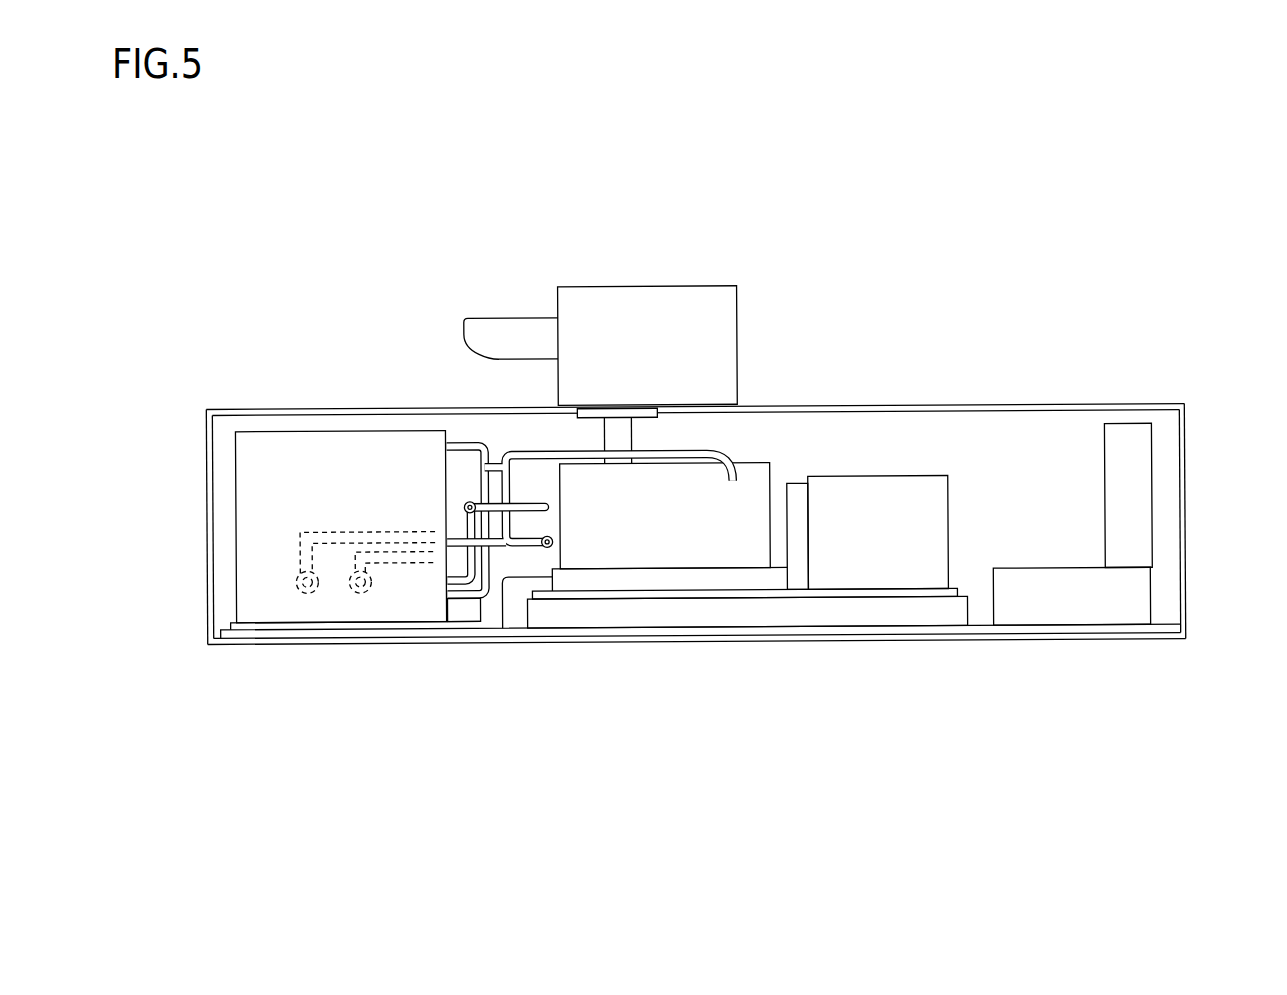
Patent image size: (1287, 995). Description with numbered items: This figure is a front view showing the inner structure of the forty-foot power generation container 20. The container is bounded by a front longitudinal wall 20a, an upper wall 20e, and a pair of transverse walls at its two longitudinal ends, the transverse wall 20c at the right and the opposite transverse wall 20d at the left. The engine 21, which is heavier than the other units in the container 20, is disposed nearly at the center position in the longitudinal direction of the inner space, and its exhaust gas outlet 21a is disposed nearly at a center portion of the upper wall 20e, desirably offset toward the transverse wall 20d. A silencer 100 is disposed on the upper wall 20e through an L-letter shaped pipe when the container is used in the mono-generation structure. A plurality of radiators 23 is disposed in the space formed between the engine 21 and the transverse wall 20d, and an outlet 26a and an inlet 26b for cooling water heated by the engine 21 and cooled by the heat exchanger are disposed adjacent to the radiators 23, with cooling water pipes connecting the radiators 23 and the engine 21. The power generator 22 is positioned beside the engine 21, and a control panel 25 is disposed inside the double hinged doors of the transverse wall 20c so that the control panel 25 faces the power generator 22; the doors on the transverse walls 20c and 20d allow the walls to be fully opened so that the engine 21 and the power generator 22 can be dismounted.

The silencer 100 is at (640, 284).
The 40-f container 20 is at (697, 473).
The front longitudinal wall 20a is at (1043, 488).
The 40-f transverse wall 20c is at (1186, 585).
The 40-f transverse wall 20d is at (208, 544).
The upper wall 20e is at (897, 406).
The engine 21 is at (672, 543).
The exhaust gas outlet 21a is at (602, 437).
The power generator 22 is at (885, 541).
The radiators 23 is at (322, 455).
The control panel 25 is at (1130, 468).
The outlet 26a is at (361, 591).
The inlet 26b is at (304, 591).